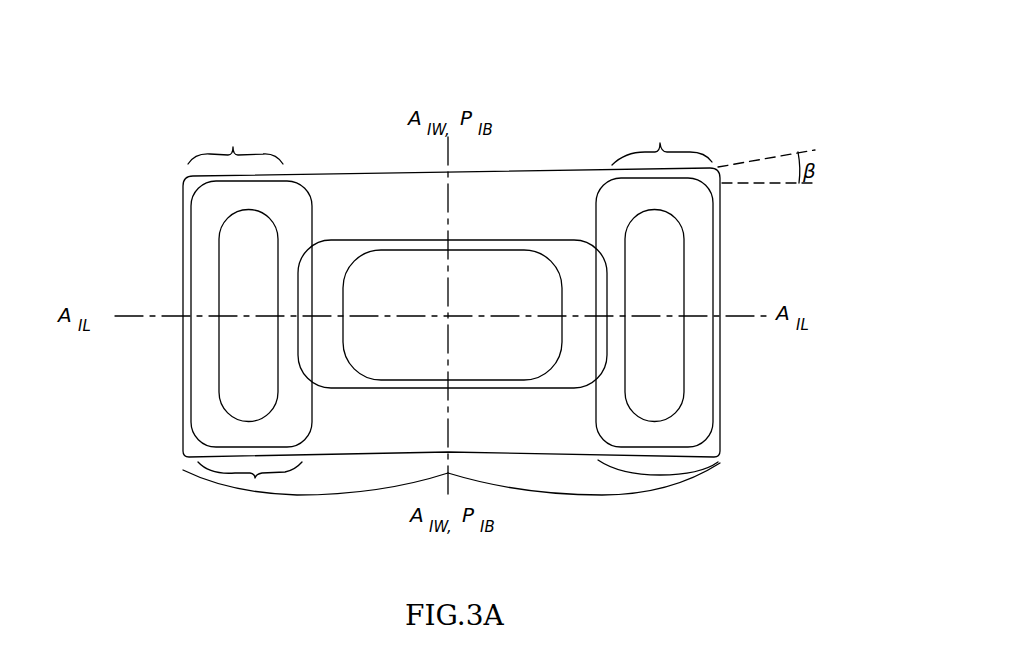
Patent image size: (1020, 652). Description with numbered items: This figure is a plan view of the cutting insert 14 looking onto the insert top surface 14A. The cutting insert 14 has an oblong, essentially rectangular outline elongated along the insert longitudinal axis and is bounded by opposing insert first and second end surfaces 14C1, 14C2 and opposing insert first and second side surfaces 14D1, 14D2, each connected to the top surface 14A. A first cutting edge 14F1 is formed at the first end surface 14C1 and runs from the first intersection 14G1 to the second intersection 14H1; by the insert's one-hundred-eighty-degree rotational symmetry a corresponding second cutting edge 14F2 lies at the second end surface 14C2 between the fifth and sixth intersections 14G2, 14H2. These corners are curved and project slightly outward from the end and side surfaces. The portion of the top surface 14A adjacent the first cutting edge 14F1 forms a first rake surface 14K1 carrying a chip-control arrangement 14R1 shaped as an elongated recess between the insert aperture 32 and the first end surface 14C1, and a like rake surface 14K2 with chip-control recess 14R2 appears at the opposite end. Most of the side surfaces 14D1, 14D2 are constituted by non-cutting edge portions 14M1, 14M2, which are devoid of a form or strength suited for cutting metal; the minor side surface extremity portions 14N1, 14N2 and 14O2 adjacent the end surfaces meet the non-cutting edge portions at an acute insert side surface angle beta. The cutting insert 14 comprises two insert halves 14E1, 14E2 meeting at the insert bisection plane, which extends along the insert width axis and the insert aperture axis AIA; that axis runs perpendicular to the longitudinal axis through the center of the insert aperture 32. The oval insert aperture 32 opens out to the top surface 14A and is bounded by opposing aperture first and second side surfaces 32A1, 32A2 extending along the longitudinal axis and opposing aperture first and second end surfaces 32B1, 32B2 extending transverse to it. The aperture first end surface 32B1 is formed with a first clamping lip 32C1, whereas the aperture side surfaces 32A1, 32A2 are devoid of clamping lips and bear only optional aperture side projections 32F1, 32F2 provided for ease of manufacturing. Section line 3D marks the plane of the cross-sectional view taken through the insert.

The cutting insert 14 is at (730, 122).
The insert top surface 14A is at (330, 222).
The insert first end surface 14C1 is at (780, 314).
The first cutting edge 14F1 is at (722, 288).
The insert second end surface 14C2 is at (118, 299).
The second side face 14F2 is at (180, 228).
The insert first side surface 14D1 is at (353, 173).
The insert second side surface 14D2 is at (333, 455).
The first insert half 14E1 is at (602, 495).
The second insert half 14E2 is at (297, 495).
The first intersection 14G1 is at (715, 168).
The fifth intersection 14G2 is at (183, 457).
The second intersection 14H1 is at (727, 460).
The sixth intersection 14H2 is at (183, 172).
The first rake surface 14K1 is at (719, 312).
The chip-control arrangement 14R1 is at (692, 248).
The second recess 14K2 is at (182, 314).
The second slot 14R2 is at (215, 288).
The first non-cutting edge portion 14M1 is at (388, 173).
The second non-cutting edge portion 14M2 is at (520, 453).
The insert side surface extremity portion 14N1 is at (662, 139).
The second end portion 14N2 is at (255, 478).
The second outer portion 14O2 is at (235, 141).
The insert aperture 32 is at (488, 292).
The aperture first side surface 32A1 is at (422, 131).
The aperture side projection 32F1 is at (400, 245).
The aperture second side surface 32A2 is at (483, 390).
The aperture side projection 32F2 is at (485, 380).
The aperture first end surface 32B1 is at (707, 350).
The first clamping lip 32C1 is at (577, 363).
The aperture second end surface 32B2 is at (330, 357).
The section line 3D is at (183, 495).
The insert aperture axis AIA is at (448, 316).